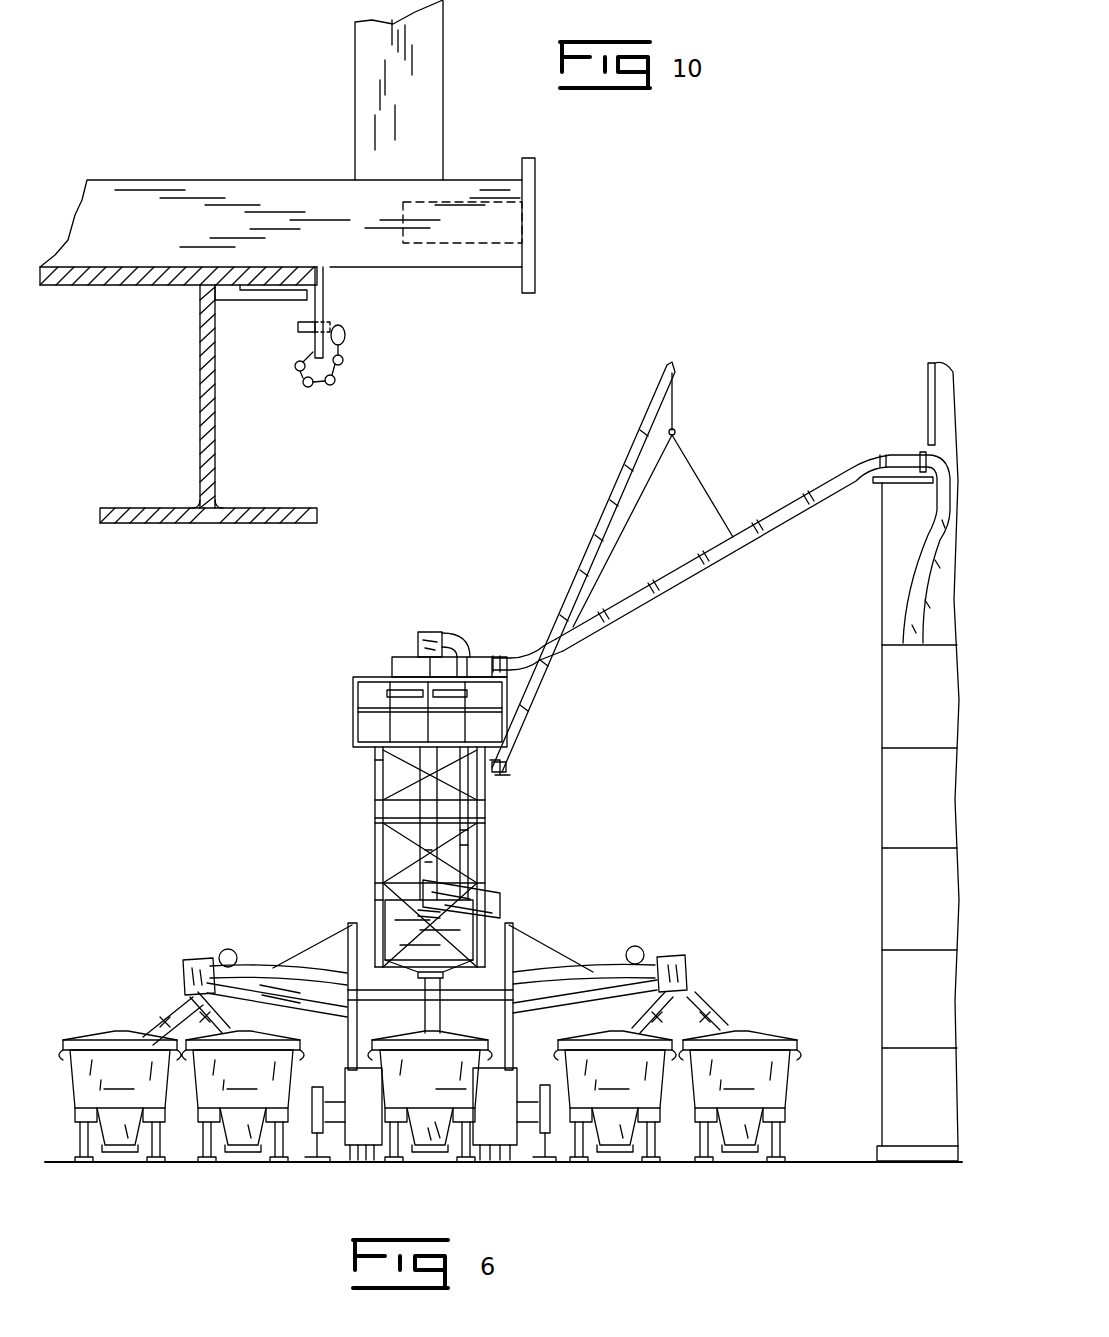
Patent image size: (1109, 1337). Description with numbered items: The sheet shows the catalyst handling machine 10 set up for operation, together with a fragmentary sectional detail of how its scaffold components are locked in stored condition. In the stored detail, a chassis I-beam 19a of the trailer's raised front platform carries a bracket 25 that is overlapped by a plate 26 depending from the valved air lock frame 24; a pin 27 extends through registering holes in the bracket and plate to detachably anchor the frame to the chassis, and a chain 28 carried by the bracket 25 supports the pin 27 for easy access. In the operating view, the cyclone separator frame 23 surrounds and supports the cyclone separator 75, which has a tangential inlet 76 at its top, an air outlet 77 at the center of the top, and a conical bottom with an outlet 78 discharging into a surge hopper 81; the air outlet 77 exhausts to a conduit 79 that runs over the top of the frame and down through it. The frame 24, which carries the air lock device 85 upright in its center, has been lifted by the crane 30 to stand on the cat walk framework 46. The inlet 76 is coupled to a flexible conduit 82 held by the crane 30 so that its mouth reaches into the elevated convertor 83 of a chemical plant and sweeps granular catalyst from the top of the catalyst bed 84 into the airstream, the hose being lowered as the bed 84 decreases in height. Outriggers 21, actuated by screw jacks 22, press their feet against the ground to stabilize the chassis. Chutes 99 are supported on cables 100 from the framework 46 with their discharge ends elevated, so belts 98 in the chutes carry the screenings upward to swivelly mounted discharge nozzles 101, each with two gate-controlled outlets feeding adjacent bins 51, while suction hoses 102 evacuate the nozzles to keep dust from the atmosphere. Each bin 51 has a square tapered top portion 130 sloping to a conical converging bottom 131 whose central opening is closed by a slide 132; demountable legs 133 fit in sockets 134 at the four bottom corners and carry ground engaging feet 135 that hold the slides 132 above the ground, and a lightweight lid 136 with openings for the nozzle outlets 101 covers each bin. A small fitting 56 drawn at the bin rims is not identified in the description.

In FIG. 10, the chassis I-beam 19a is at (197, 330).
In FIG. 10, the valved air lock frame 24 is at (475, 280).
In FIG. 6, the valved air lock frame 24 is at (373, 822).
In FIG. 10, the bracket 25 is at (277, 292).
In FIG. 10, the plate 26 is at (324, 315).
In FIG. 10, the pin 27 is at (297, 326).
In FIG. 10, the chain 28 is at (341, 358).
In FIG. 6, the machine 10 is at (455, 618).
In FIG. 6, the outrigger 21 is at (318, 1164).
In FIG. 6, the screw jack 22 is at (322, 1085).
In FIG. 6, the cyclone separator frame 23 is at (512, 712).
In FIG. 6, the crane 30 is at (575, 548).
In FIG. 6, the cat walk framework 46 is at (374, 906).
In FIG. 6, the bin 51 is at (430, 1074).
In FIG. 6, the container lug 56 is at (557, 1053).
In FIG. 6, the cyclone separator 75 is at (400, 658).
In FIG. 6, the tangential inlet 76 is at (487, 657).
In FIG. 6, the air outlet 77 is at (462, 650).
In FIG. 6, the outlet 78 is at (375, 755).
In FIG. 6, the conduit 79 is at (432, 632).
In FIG. 6, the surge hopper 81 is at (507, 797).
In FIG. 6, the flexible conduit 82 is at (692, 570).
In FIG. 6, the convertor 83 is at (950, 405).
In FIG. 6, the catalyst bed 84 is at (892, 693).
In FIG. 6, the air lock device 85 is at (472, 822).
In FIG. 6, the belt 98 is at (270, 990).
In FIG. 6, the chute 99 is at (318, 1000).
In FIG. 6, the cable 100 is at (318, 943).
In FIG. 6, the discharge nozzle 101 is at (162, 1015).
In FIG. 6, the suction hose 102 is at (595, 972).
In FIG. 6, the square tapered top portion 130 is at (790, 1090).
In FIG. 6, the conical converging bottom 131 is at (112, 1135).
In FIG. 6, the slide 132 is at (133, 1153).
In FIG. 6, the demountable leg 133 is at (278, 1145).
In FIG. 6, the socket 134 is at (782, 1113).
In FIG. 6, the ground engaging foot 135 is at (463, 1160).
In FIG. 6, the lid 136 is at (112, 1035).